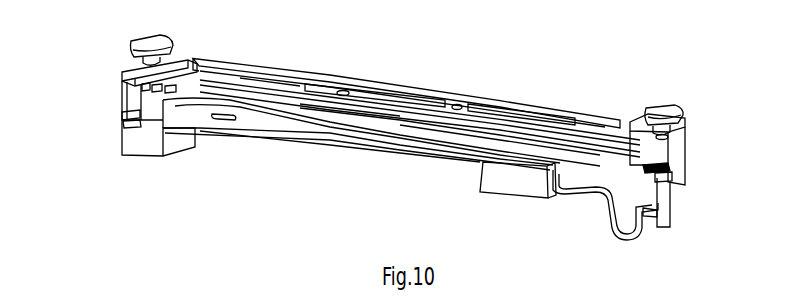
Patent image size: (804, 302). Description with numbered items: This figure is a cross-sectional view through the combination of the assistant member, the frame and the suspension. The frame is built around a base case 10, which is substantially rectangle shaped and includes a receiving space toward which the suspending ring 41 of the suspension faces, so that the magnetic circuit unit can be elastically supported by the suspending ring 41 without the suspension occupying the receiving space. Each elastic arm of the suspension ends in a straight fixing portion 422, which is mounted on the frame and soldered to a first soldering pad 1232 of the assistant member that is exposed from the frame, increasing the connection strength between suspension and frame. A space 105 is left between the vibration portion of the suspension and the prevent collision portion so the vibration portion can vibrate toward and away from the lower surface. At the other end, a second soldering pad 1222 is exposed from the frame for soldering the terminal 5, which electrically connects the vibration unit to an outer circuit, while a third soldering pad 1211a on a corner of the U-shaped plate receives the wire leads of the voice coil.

The third soldering pad 1211a is at (189, 67).
The first soldering pad 1232 is at (119, 114).
The fixing portion 422 is at (125, 123).
The suspending ring 41 is at (194, 119).
The space 105 is at (262, 106).
The base case 10 is at (678, 143).
The second soldering pad 1222 is at (678, 170).
The terminal 5 is at (678, 176).